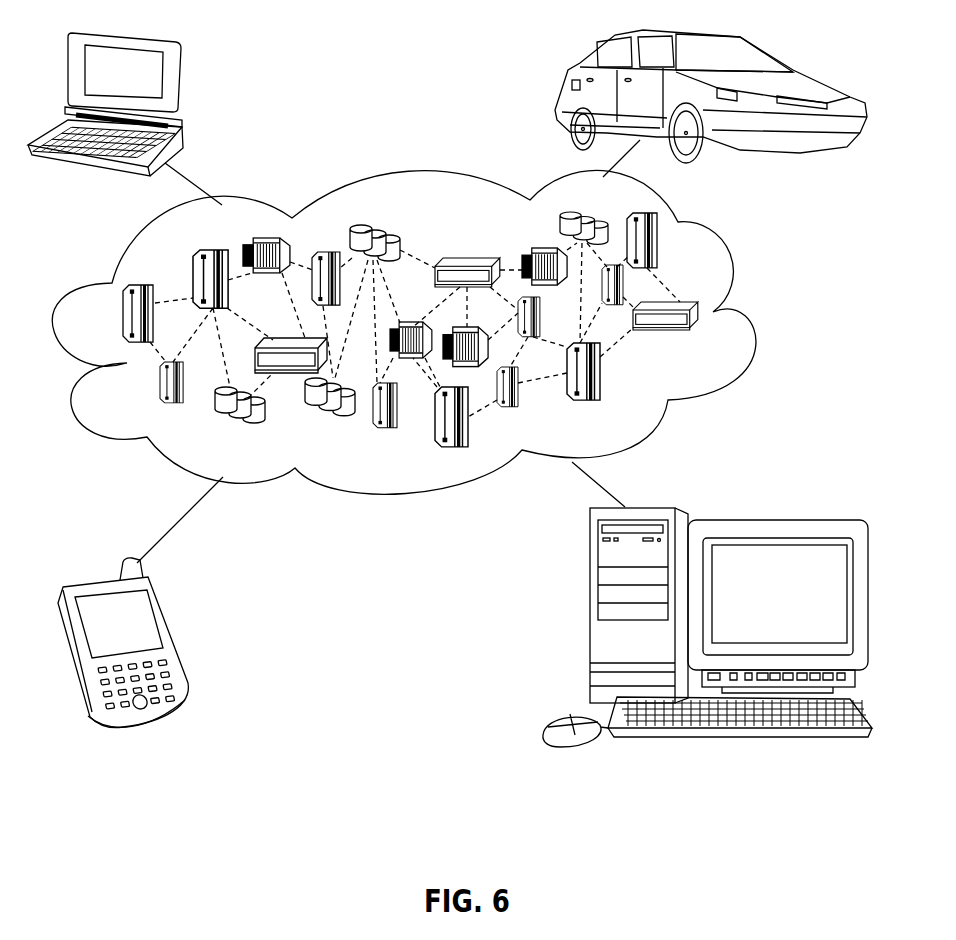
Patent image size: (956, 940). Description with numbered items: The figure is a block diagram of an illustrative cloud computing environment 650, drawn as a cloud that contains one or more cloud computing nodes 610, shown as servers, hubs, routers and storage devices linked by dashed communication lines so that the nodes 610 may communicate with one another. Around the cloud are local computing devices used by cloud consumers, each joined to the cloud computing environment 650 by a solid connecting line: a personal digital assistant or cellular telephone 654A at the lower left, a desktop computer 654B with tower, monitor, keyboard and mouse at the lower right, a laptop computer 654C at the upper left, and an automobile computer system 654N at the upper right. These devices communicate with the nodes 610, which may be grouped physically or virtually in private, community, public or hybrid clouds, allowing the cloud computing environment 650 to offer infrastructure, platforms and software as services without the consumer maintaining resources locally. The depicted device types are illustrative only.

The laptop computer 654C is at (178, 79).
The automobile computer system 654N is at (563, 87).
The personal digital assistant (PDA) or cellular telephone 654A is at (173, 633).
The desktop computer 654B is at (590, 617).
The cloud computing environment 650 is at (745, 277).
The cloud computing nodes 610 is at (731, 339).